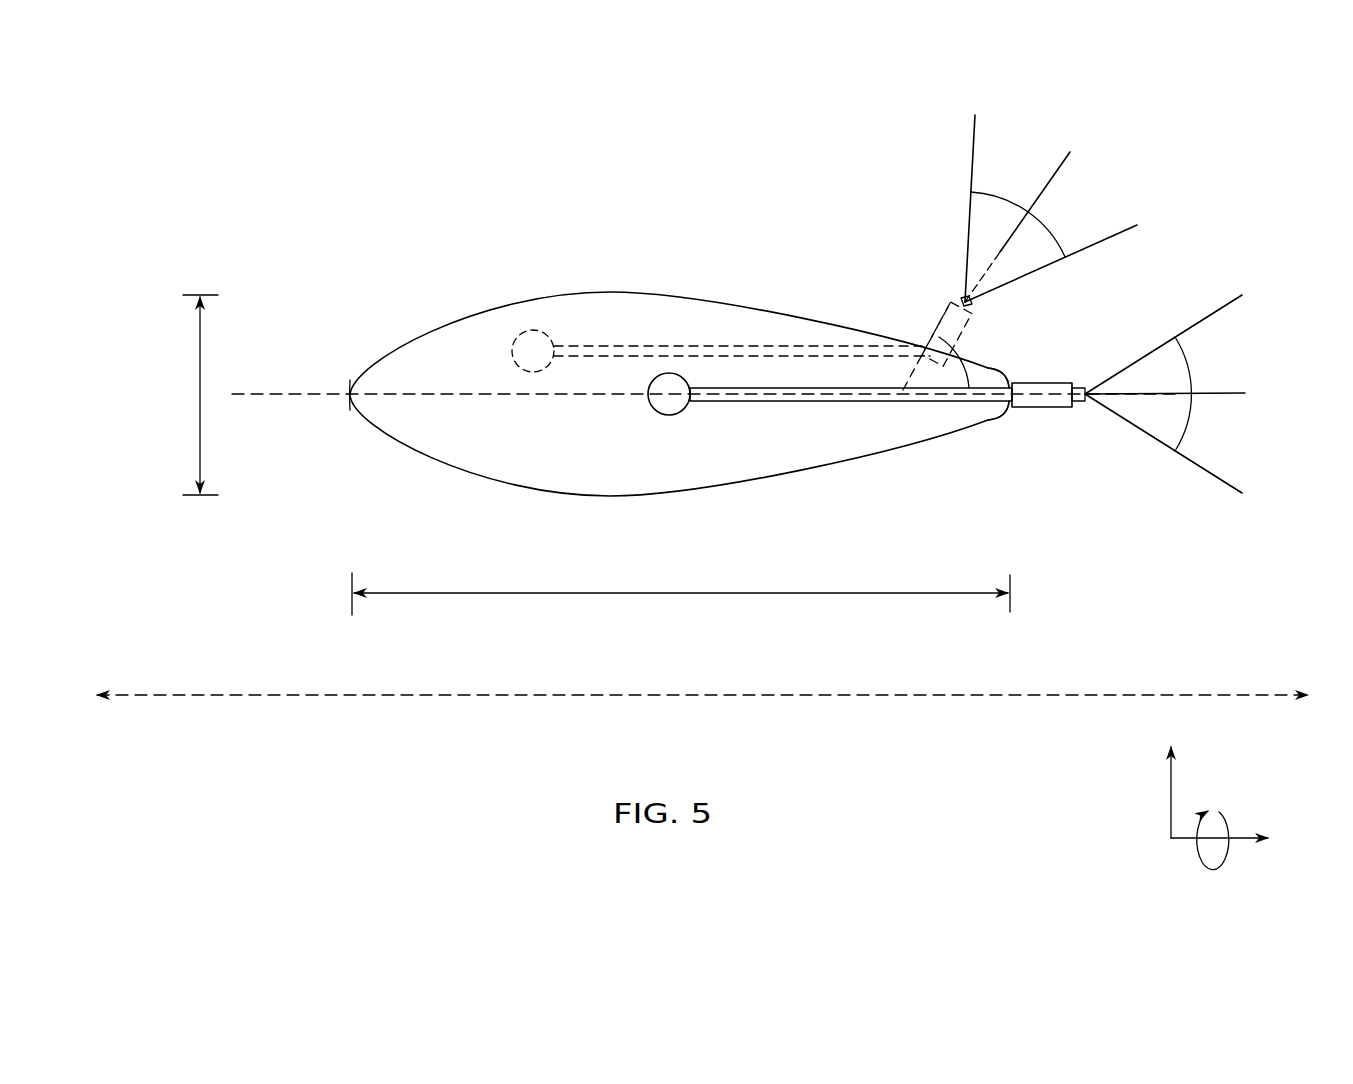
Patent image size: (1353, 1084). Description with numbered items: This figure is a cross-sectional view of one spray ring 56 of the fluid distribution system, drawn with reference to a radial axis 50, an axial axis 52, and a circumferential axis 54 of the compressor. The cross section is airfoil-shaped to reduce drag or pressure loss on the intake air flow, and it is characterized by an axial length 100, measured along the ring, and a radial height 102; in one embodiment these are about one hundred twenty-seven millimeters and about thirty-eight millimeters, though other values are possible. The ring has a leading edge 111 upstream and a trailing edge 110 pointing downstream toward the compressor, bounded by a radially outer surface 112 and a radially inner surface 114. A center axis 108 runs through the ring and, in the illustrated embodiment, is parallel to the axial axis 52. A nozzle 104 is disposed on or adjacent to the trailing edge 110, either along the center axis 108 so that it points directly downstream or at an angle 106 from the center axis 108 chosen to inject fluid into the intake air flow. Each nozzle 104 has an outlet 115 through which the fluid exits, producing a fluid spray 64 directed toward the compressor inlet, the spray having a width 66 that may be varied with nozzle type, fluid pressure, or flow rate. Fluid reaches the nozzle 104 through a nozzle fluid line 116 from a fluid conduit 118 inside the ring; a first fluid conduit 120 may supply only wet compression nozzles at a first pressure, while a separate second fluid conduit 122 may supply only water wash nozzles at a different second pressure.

The radial axis 50 is at (1172, 790).
The axial axis 52 is at (343, 694).
The circumferential axis 54 is at (1226, 862).
The spray ring 56 is at (684, 399).
The fluid spray 64 is at (973, 160).
The width 66 is at (993, 192).
The axial length 100 is at (677, 596).
The radial height 102 is at (200, 392).
The nozzle 104 is at (933, 330).
The angle 106 is at (970, 372).
The center axis 108 is at (440, 400).
The trailing edge 110 is at (1013, 420).
The leading edge 111 is at (347, 390).
The radially outer surface 112 is at (613, 290).
The radially inner surface 114 is at (570, 512).
The outlet 115 is at (1073, 384).
The nozzle fluid line 116 is at (616, 348).
The fluid conduit 118 is at (578, 356).
The first fluid conduit 120 is at (668, 416).
The second fluid conduit 122 is at (527, 336).